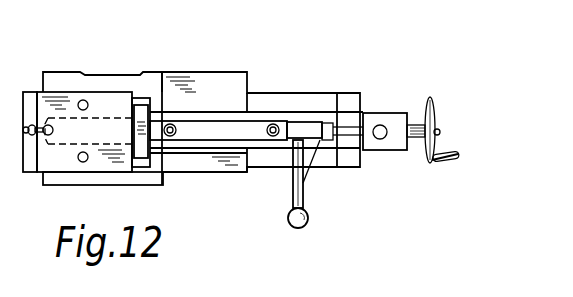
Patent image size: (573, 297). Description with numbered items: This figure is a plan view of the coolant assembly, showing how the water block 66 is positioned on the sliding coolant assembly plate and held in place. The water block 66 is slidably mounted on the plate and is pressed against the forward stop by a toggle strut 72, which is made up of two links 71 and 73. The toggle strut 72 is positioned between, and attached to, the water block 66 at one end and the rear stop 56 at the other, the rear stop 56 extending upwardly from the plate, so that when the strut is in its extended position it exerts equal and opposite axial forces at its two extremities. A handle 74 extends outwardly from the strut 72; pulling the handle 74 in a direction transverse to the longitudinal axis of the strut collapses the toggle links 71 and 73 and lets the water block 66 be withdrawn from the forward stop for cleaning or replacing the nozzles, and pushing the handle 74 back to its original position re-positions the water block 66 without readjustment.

The water block 66 is at (107, 97).
The link 71 is at (248, 127).
The toggle strut 72 is at (258, 128).
The link 73 is at (312, 127).
The rear stop 56 is at (390, 120).
The handle 74 is at (303, 198).